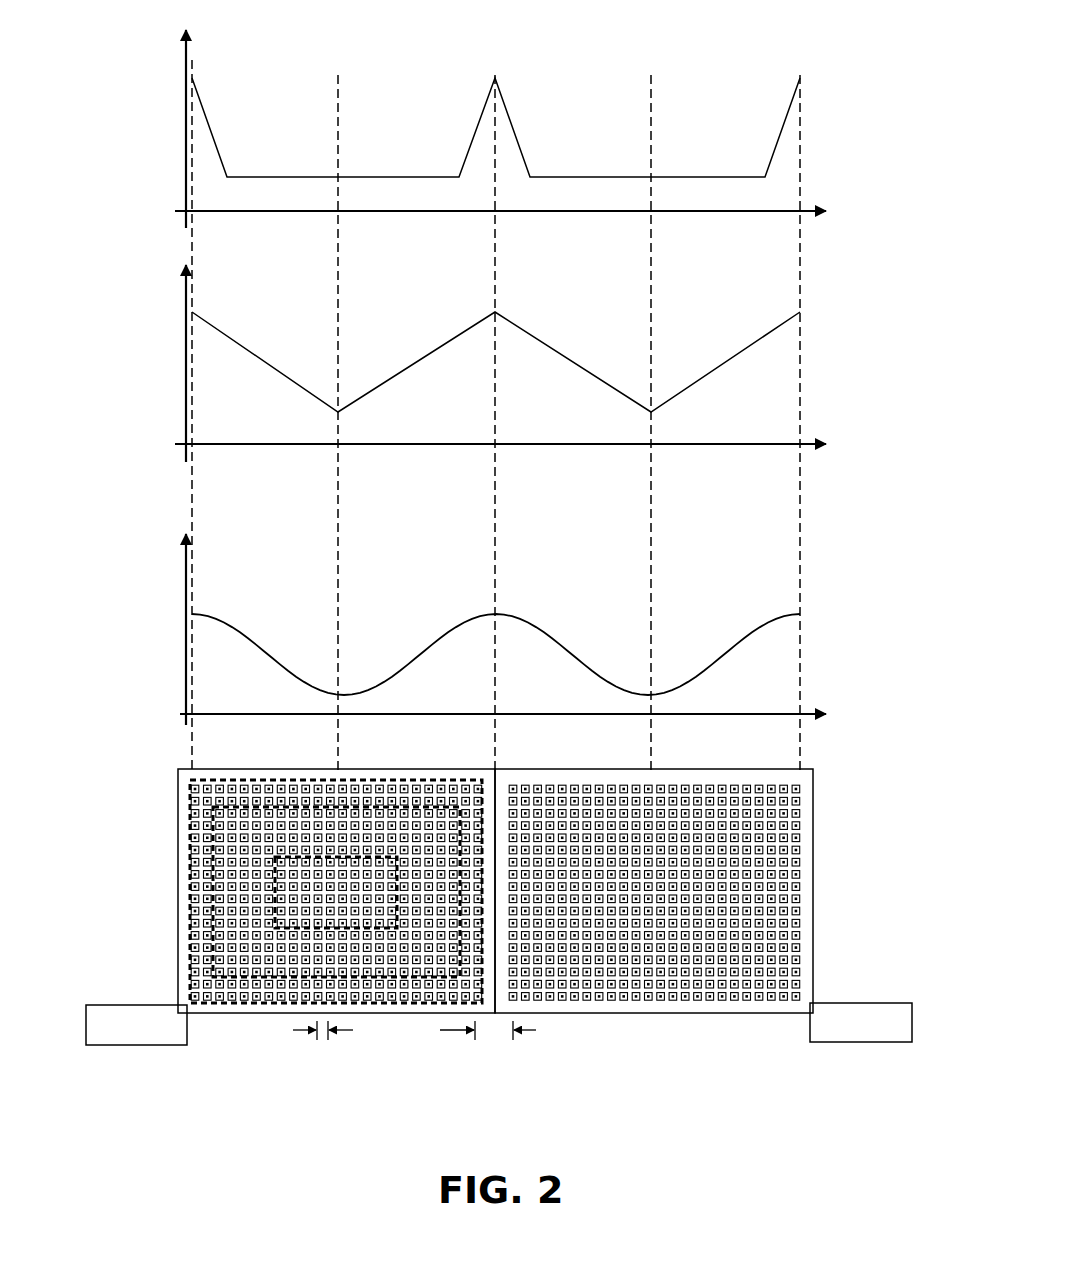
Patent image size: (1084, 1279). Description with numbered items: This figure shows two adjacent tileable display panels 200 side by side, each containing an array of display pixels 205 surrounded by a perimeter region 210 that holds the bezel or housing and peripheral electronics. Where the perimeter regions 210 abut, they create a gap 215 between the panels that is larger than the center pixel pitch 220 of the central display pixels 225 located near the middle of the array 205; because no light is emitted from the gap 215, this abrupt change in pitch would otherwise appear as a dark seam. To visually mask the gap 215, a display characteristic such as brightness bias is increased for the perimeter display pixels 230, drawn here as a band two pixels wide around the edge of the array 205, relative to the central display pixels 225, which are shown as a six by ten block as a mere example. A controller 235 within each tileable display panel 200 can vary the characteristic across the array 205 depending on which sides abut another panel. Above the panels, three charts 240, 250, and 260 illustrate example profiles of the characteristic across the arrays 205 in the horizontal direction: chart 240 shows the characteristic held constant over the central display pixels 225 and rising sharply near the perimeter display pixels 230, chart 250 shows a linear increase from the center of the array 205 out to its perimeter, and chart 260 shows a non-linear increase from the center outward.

The tileable display panel 200 is at (204, 1058).
The array of display pixels 205 is at (183, 789).
The perimeter region 210 is at (186, 908).
The gap 215 is at (488, 1043).
The center pixel pitch 220 is at (323, 1043).
The central display pixels 225 is at (300, 887).
The perimeter display pixels 230 is at (405, 806).
The controller 235 is at (180, 1036).
The chart 240 is at (148, 138).
The chart 250 is at (148, 342).
The chart 260 is at (148, 612).